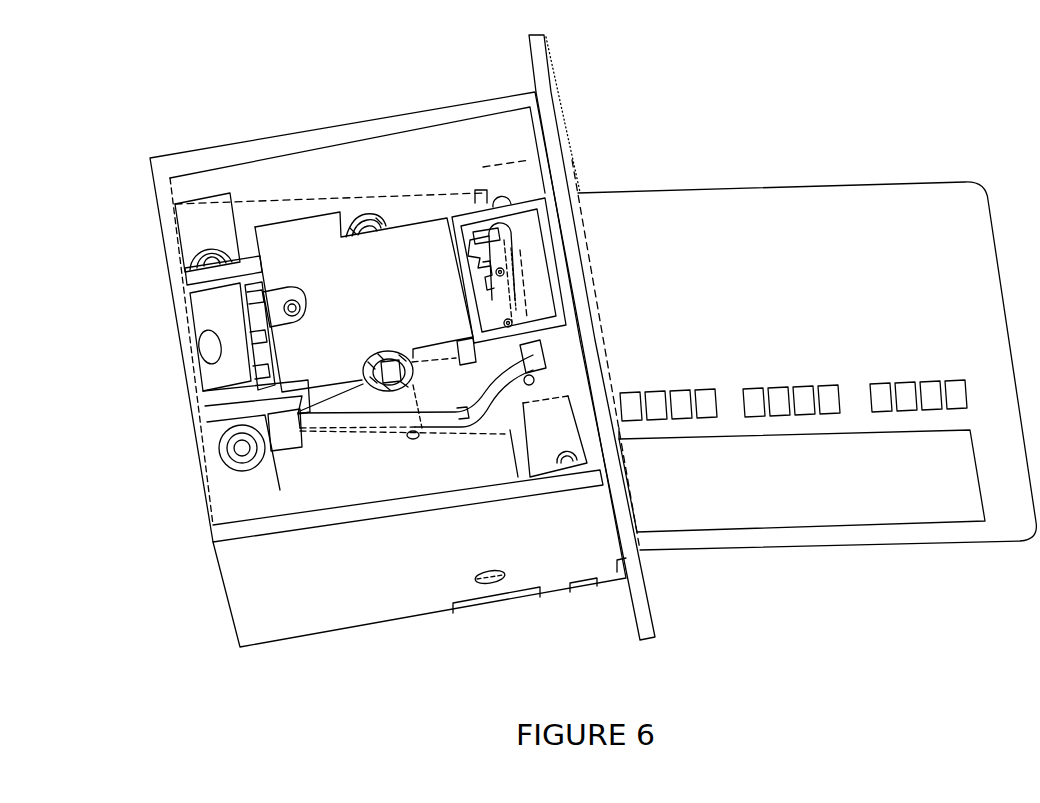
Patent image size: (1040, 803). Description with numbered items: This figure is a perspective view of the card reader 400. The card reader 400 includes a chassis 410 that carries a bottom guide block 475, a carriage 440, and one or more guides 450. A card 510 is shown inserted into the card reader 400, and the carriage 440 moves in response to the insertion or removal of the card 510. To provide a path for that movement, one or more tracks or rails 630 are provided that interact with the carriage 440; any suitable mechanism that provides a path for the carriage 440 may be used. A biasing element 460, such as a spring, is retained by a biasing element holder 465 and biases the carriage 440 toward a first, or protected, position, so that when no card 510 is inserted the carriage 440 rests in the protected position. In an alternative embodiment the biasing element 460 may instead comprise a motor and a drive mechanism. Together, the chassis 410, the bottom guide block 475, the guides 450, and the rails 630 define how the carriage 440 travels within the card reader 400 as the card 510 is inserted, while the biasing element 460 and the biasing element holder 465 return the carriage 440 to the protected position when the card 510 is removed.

The card reader 400 is at (806, 437).
The chassis 410 is at (247, 597).
The carriage 440 is at (490, 295).
The guides 450 is at (537, 374).
The biasing element 460 is at (413, 397).
The biasing element holder 465 is at (310, 242).
The bottom guide block 475 is at (265, 465).
The card 510 is at (828, 570).
The tracks or rails 630 is at (370, 427).